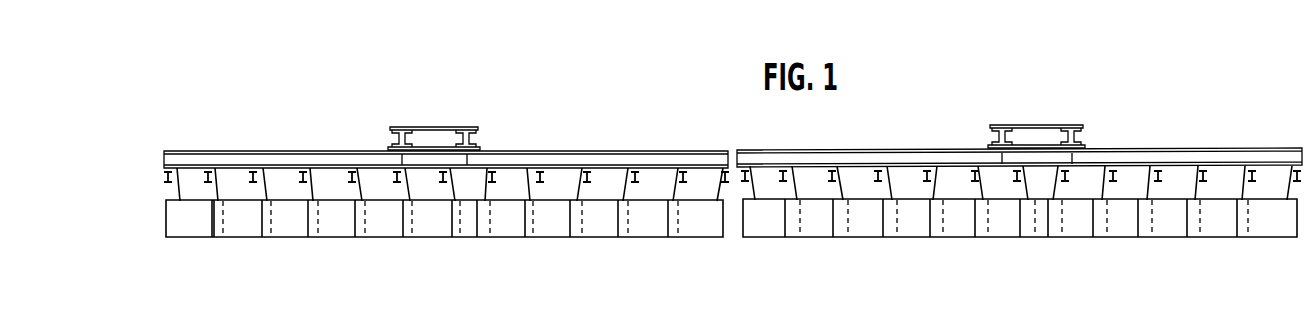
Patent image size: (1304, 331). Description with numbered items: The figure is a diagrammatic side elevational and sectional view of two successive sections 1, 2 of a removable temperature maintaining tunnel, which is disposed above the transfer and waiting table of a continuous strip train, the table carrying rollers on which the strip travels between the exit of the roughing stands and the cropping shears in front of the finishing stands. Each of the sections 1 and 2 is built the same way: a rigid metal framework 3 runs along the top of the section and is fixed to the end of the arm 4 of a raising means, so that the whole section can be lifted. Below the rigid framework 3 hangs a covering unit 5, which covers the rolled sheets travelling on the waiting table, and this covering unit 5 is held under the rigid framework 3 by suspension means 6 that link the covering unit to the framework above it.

The section 1 is at (306, 243).
The section 2 is at (965, 240).
The rigid metal framework 3 is at (222, 162).
The arm 4 is at (434, 135).
The covering unit 5 is at (607, 227).
The suspension means 6 is at (530, 197).